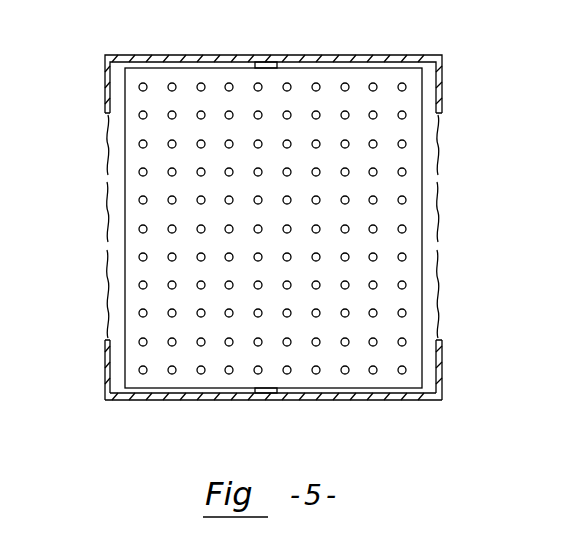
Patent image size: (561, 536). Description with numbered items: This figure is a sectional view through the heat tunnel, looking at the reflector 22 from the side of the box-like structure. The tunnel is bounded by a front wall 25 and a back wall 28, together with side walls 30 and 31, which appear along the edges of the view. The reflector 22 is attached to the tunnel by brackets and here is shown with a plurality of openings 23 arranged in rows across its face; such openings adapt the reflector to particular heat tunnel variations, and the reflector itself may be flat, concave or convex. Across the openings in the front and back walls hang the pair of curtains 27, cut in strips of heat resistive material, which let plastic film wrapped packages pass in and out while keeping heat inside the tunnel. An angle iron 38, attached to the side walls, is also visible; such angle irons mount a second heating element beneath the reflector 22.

The reflector 22 is at (422, 197).
The openings 23 is at (406, 314).
The front wall 25 is at (448, 378).
The pair of curtains 27 is at (100, 232).
The back wall 28 is at (100, 378).
The side wall 30 is at (210, 402).
The side wall 31 is at (208, 54).
The angle iron 38 is at (292, 397).